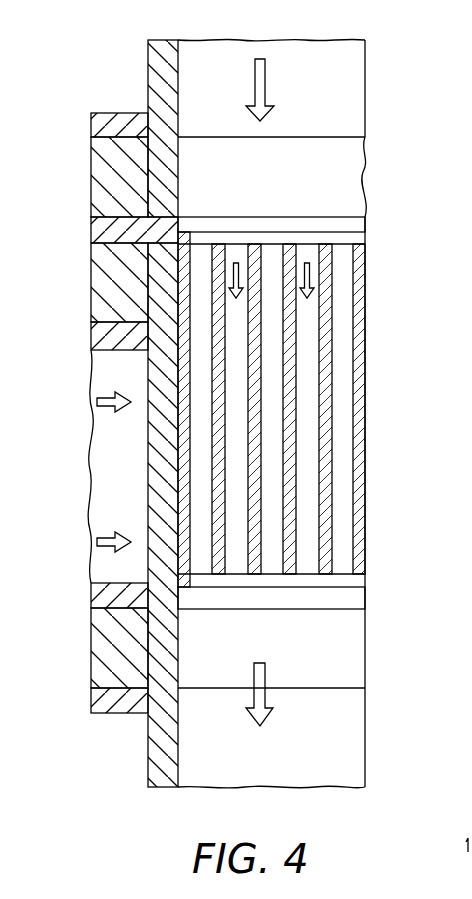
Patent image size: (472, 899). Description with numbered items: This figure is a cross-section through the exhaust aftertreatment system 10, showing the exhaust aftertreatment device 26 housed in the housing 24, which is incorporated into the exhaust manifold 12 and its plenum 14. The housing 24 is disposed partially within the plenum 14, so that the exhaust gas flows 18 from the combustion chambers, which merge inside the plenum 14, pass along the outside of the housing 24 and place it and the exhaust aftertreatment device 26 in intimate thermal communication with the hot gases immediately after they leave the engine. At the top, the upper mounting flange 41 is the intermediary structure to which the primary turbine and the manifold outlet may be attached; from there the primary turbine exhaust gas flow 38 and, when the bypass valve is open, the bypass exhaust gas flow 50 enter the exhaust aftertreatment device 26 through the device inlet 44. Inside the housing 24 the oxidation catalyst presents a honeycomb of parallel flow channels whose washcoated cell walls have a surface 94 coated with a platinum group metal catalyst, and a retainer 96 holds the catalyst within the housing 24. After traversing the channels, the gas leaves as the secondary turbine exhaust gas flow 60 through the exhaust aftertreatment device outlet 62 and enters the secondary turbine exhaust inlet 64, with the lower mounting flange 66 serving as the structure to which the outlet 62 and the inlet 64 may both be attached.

The exhaust aftertreatment system 10 is at (368, 370).
The exhaust manifold 12 is at (90, 337).
The plenum 14 is at (118, 488).
The exhaust gas flow 18 is at (110, 398).
The housing 24 is at (152, 476).
The exhaust aftertreatment device 26 is at (298, 232).
The primary turbine exhaust gas flow 38 is at (350, 169).
The upper mounting flange 41 is at (115, 287).
The device inlet 44 is at (268, 217).
The bypass exhaust gas flow 50 is at (262, 88).
The secondary turbine exhaust gas flow 60 is at (258, 680).
The exhaust aftertreatment device outlet 62 is at (333, 610).
The secondary turbine exhaust inlet 64 is at (318, 688).
The lower mounting flange 66 is at (110, 650).
The surface 94 is at (292, 498).
The retainer 96 is at (186, 244).